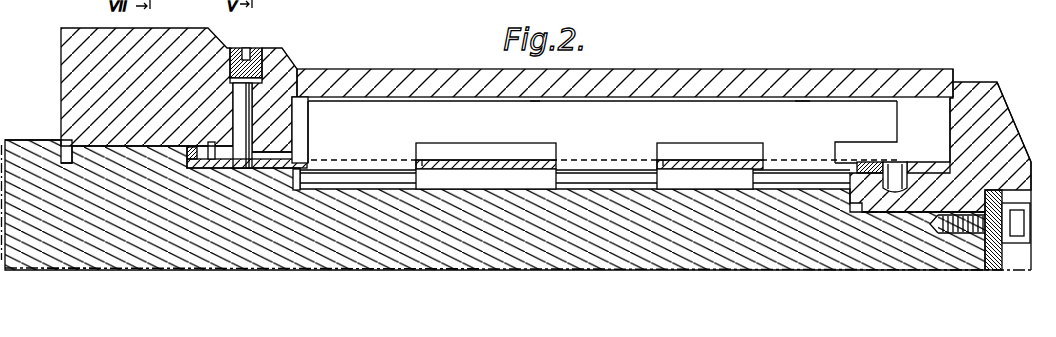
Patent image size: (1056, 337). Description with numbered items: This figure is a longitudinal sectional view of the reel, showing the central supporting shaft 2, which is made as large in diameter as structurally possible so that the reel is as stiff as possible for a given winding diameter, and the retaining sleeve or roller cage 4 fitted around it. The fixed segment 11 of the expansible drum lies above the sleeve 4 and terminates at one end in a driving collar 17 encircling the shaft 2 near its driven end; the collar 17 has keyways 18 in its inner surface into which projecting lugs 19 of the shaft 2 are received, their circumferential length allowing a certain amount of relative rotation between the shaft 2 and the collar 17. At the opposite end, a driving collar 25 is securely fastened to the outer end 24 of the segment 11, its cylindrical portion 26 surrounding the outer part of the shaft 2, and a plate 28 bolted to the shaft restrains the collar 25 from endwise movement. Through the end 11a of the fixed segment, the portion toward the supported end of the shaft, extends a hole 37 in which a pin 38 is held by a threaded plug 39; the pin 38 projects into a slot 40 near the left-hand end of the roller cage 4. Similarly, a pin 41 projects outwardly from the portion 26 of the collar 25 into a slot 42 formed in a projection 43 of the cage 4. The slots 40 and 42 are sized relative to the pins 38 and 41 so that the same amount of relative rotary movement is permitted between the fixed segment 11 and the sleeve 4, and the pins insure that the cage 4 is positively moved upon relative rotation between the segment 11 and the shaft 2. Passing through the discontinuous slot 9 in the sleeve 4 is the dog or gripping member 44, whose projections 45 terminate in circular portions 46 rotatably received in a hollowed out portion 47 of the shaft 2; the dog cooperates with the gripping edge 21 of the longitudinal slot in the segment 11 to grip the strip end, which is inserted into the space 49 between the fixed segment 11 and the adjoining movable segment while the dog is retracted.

The central supporting shaft 2 is at (306, 253).
The retaining sleeve or roller cage 4 is at (452, 160).
The discontinuous longitudinal slot 9 is at (422, 164).
The fixed segment 11 is at (742, 83).
The end of fixed segment 11a is at (222, 46).
The driving collar 17 is at (61, 65).
The keyways 18 is at (61, 140).
The projecting lugs 19 is at (90, 145).
The gripping edge 21 is at (613, 100).
The outer end of fixed segment 24 is at (952, 72).
The driving collar 25 is at (997, 82).
The cylindrical portion 26 is at (927, 183).
The plate 28 is at (1027, 163).
The hole 37 is at (294, 71).
The pin 38 is at (250, 124).
The threaded plug 39 is at (263, 50).
The slot 40 is at (294, 160).
The pin 41 is at (900, 163).
The slot 42 is at (872, 158).
The projection 43 is at (910, 158).
The dog or gripping member 44 is at (802, 118).
The projections 45 is at (372, 137).
The circular portions 46 is at (363, 180).
The hollowed out portion 47 is at (503, 188).
The space 49 is at (532, 106).